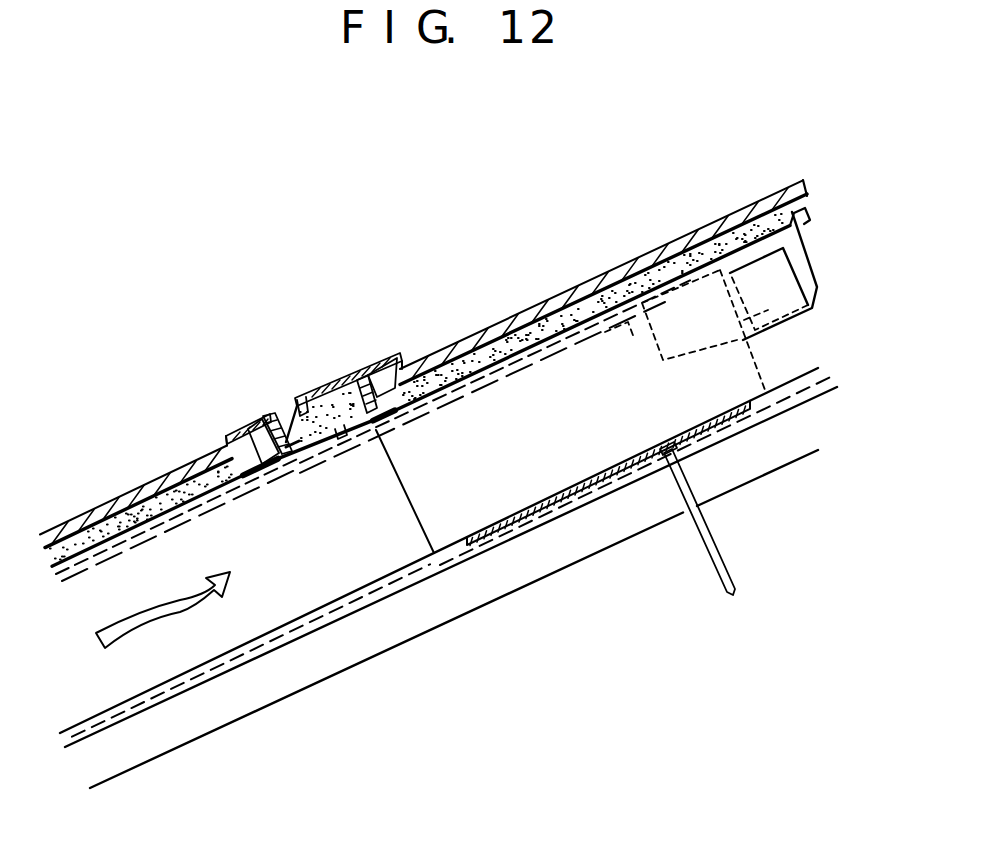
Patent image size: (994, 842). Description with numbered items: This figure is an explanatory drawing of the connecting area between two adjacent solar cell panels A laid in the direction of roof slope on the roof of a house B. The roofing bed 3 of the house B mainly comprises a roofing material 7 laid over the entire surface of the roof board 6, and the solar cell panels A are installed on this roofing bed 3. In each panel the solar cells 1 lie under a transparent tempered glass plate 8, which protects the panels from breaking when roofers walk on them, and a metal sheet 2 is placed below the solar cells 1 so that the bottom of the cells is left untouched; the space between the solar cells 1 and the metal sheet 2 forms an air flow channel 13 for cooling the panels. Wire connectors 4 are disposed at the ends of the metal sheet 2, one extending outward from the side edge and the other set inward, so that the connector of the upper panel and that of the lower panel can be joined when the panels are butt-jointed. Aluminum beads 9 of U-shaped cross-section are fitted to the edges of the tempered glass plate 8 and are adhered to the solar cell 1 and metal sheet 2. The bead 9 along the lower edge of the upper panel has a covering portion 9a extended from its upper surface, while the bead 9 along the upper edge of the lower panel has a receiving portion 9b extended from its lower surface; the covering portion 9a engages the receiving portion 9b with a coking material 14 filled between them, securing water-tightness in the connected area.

The solar cell 1 is at (84, 552).
The metal sheet 2 is at (92, 714).
The roofing bed 3 is at (250, 716).
The wire connector 4 is at (808, 270).
The roof board 6 is at (148, 744).
The roofing material 7 is at (185, 688).
The tempered glass plate 8 is at (135, 498).
The aluminum bead 9 is at (247, 433).
The covering portion 9a is at (332, 394).
The receiving portion 9b is at (298, 410).
The air flow channel 13 is at (788, 343).
The coking material 14 is at (320, 447).
The solar cell panel A is at (70, 519).
The house B is at (344, 677).